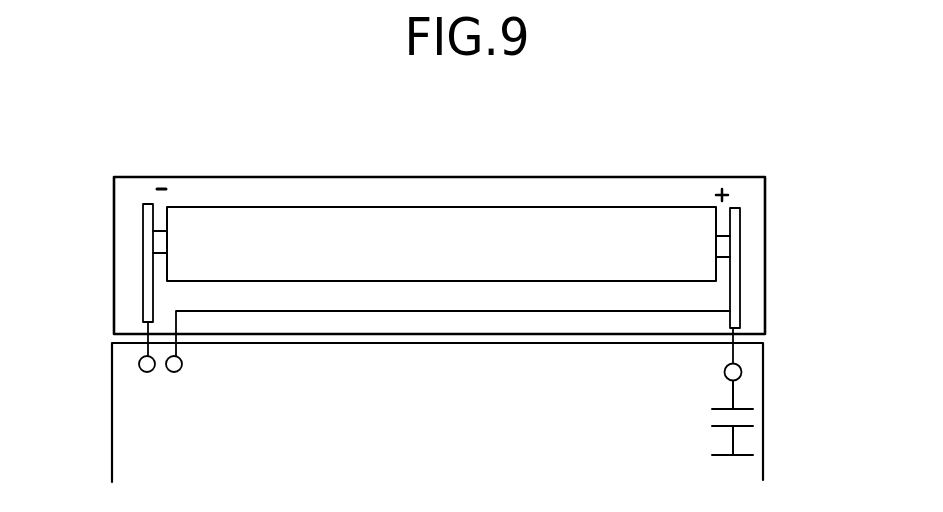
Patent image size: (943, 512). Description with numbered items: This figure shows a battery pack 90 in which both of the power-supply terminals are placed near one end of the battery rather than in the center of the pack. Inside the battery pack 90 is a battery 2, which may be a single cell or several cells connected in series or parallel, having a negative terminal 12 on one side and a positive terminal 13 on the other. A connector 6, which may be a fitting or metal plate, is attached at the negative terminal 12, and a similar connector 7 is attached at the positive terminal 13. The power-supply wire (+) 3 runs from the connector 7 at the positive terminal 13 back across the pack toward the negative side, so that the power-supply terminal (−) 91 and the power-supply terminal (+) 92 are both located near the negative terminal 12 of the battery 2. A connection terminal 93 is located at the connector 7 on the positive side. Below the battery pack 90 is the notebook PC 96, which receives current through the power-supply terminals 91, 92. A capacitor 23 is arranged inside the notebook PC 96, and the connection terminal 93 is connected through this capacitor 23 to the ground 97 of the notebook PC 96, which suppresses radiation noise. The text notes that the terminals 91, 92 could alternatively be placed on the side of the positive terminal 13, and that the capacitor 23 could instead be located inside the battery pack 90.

The battery 2 is at (640, 207).
The power-supply wire (+) 3 is at (550, 311).
The connector 6 is at (148, 297).
The connector 7 is at (735, 298).
The negative terminal 12 is at (158, 243).
The positive terminal 13 is at (720, 241).
The capacitor 23 is at (712, 415).
The battery pack 90 is at (767, 188).
The power-supply terminal (−) 91 is at (139, 364).
The power-supply terminal (+) 92 is at (174, 372).
The connection terminal 93 is at (722, 372).
The notebook PC 96 is at (765, 390).
The ground 97 is at (712, 455).